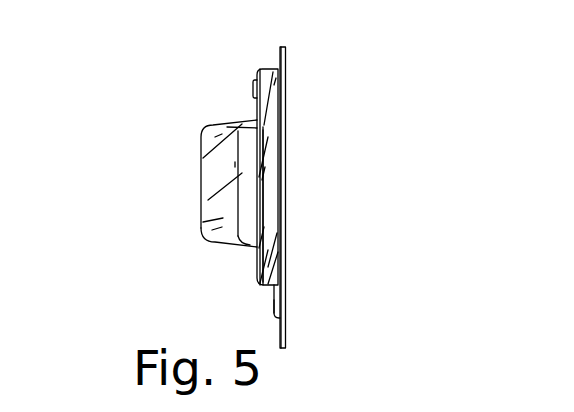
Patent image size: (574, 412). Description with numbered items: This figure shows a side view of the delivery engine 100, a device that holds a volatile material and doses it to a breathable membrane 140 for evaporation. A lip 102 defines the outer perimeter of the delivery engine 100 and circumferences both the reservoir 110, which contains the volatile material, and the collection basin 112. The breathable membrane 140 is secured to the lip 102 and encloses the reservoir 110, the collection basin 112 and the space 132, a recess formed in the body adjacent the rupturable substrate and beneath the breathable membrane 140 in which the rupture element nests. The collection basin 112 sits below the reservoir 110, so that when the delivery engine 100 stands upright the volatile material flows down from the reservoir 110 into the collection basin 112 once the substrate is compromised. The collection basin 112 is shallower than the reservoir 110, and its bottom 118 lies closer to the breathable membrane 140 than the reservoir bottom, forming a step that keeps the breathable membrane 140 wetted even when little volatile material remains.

The delivery engine 100 is at (166, 57).
The lip 102 is at (286, 60).
The reservoir 110 is at (213, 193).
The collection basin 112 is at (278, 292).
The bottom 118 is at (273, 310).
The space 132 is at (268, 215).
The breathable membrane 140 is at (284, 124).